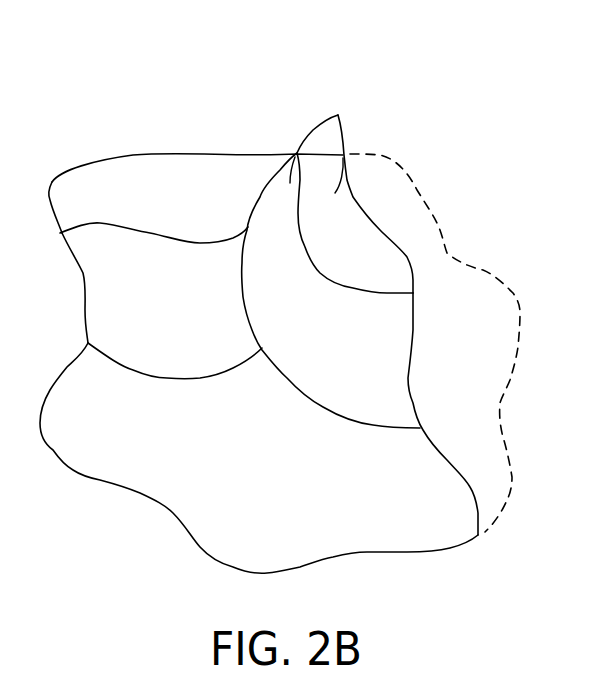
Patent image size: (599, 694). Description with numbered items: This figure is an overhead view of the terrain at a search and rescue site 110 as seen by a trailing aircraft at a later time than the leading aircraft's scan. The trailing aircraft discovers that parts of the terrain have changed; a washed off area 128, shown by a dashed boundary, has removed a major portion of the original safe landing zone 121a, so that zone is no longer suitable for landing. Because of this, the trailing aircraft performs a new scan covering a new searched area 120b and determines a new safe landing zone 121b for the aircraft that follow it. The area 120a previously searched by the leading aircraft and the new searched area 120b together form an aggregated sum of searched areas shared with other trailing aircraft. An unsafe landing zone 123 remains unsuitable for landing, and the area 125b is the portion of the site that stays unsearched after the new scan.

The search and rescue site 110 is at (239, 70).
The searched area 120a is at (331, 260).
The new searched area 120b is at (92, 250).
The safe landing zone 121a is at (362, 252).
The new safe landing zone 121b is at (153, 185).
The unsafe landing zone 123 is at (373, 352).
The unsearched area 125b is at (90, 440).
The washed off area 128 is at (488, 485).